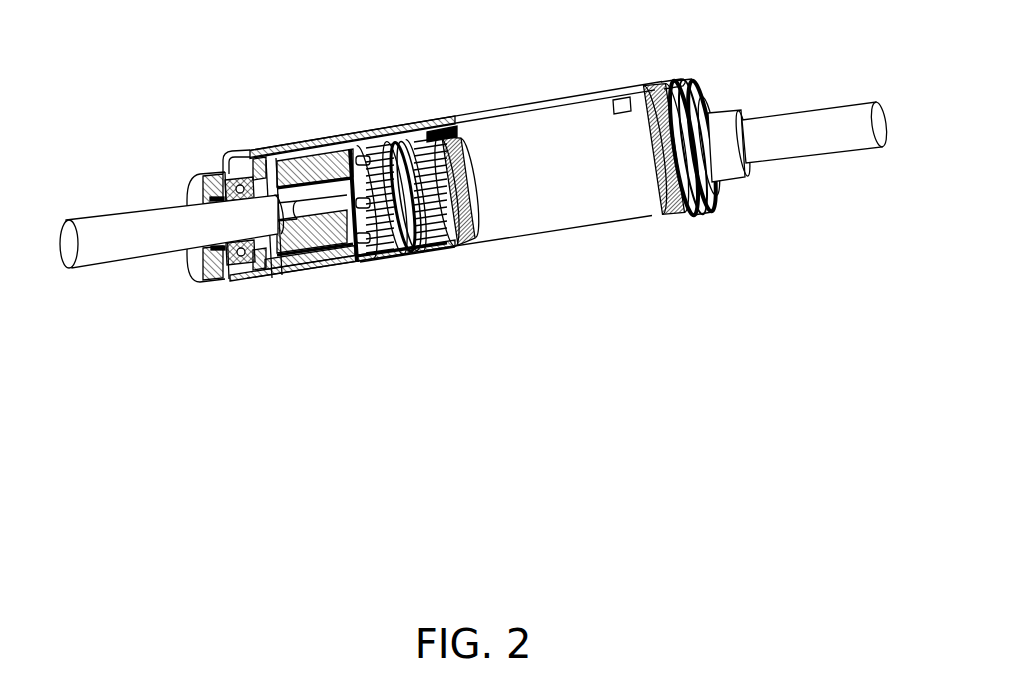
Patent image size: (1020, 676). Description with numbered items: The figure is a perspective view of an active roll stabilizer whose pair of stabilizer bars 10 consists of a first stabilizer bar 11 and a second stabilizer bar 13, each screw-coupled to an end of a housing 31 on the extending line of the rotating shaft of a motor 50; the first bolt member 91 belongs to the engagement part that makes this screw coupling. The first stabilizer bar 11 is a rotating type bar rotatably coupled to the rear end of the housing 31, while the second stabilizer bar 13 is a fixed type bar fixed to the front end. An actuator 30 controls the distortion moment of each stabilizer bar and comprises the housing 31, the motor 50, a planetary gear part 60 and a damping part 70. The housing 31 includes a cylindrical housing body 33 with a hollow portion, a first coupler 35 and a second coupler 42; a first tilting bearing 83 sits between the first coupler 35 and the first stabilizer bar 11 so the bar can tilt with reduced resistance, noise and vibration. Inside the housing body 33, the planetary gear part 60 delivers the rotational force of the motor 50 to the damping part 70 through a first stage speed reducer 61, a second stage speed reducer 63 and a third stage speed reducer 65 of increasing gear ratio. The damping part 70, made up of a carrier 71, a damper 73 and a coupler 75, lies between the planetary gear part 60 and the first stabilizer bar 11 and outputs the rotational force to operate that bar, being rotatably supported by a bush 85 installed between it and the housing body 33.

The pair of stabilizer bars 10 is at (270, 395).
The first stabilizer bar 11 is at (120, 248).
The second stabilizer bar 13 is at (832, 142).
The actuator 30 is at (270, 523).
The housing 31 is at (403, 271).
The housing body 33 is at (444, 258).
The first coupler 35 is at (225, 279).
The second coupler 42 is at (733, 171).
The motor 50 is at (612, 221).
The planetary gear part 60 is at (372, 52).
The first stage speed reducer 61 is at (448, 127).
The second stage speed reducer 63 is at (415, 121).
The third stage speed reducer 65 is at (378, 127).
The damping part 70 is at (383, 395).
The carrier 71 is at (332, 132).
The damper 73 is at (293, 144).
The coupler 75 is at (350, 274).
The first tilting bearing 83 is at (227, 177).
The bush 85 is at (289, 143).
The first bolt member 91 is at (287, 274).